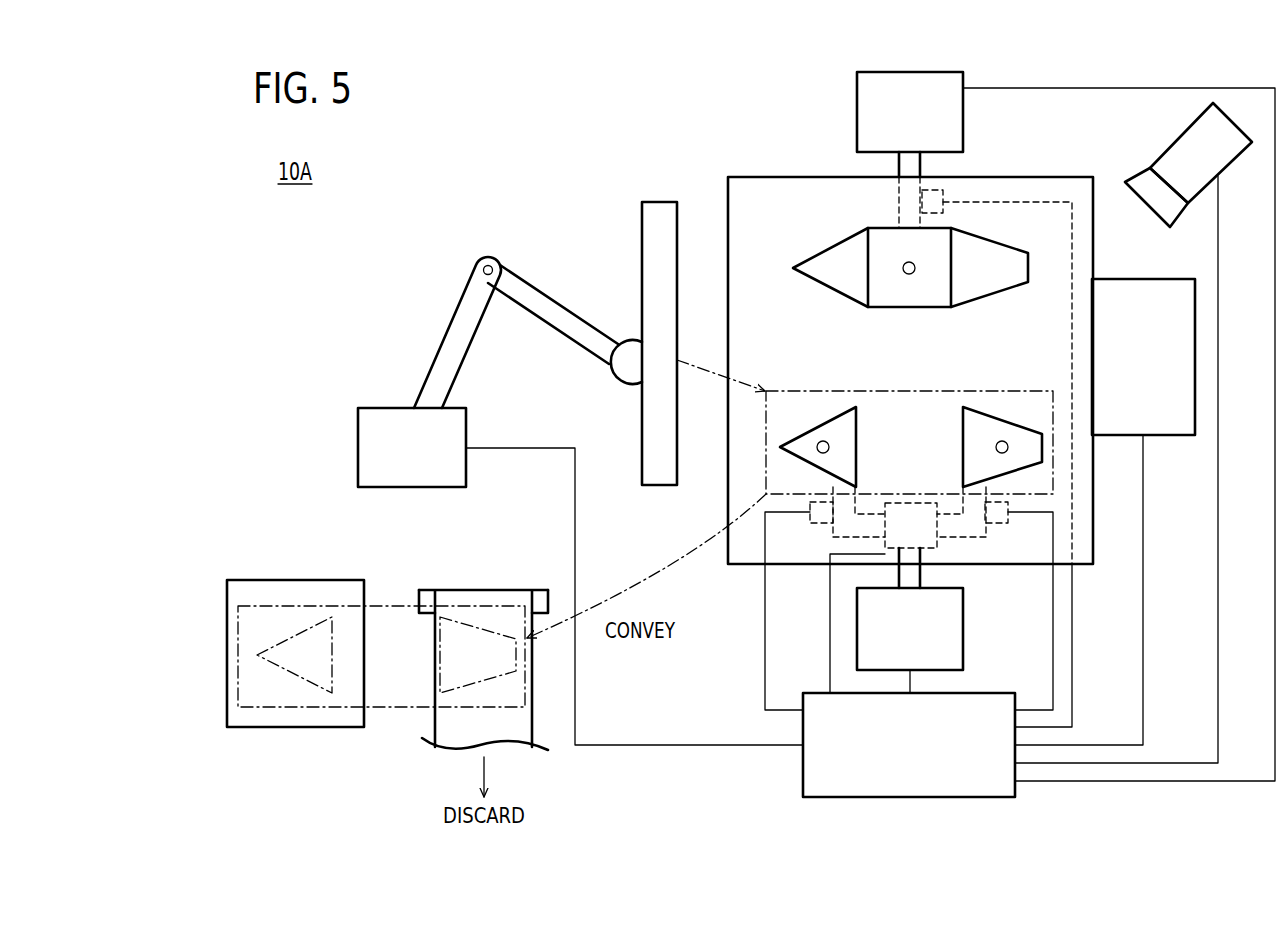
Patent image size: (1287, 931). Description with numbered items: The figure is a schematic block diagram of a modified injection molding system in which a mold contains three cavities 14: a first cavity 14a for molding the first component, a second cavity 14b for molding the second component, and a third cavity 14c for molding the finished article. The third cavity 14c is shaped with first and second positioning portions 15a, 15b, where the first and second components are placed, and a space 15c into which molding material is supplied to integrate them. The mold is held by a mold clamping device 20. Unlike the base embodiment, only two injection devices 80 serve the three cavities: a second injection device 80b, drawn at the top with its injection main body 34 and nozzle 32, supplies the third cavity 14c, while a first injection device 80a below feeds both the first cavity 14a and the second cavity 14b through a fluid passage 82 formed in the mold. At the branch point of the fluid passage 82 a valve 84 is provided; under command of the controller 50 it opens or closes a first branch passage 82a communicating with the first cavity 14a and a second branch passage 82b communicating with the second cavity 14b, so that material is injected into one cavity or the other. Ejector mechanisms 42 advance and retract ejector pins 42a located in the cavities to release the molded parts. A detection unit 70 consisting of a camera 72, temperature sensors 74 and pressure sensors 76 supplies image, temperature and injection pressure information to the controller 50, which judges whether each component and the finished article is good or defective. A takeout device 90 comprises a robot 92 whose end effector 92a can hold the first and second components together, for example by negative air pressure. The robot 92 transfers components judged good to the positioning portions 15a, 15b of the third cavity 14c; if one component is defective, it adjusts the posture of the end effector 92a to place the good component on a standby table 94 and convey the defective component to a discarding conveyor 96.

The cavities 14 is at (902, 342).
The first cavity 14a is at (818, 428).
The second cavity 14b is at (976, 428).
The third cavity 14c is at (902, 269).
The first positioning portion 15a is at (828, 258).
The second positioning portion 15b is at (968, 247).
The space 15c is at (933, 292).
The mold clamping device 20 is at (1168, 436).
The nozzle 32 is at (907, 163).
The injection main body 34 is at (947, 112).
The ejector mechanisms 42 is at (846, 235).
The ejector pins 42a is at (905, 262).
The controller 50 is at (803, 772).
The detection unit 70 is at (974, 377).
The camera 72 is at (1180, 130).
The temperature sensors 74 is at (953, 197).
The pressure sensors 76 is at (997, 523).
The injection devices 80 is at (930, 397).
The first injection device 80a is at (963, 655).
The second injection device 80b is at (857, 102).
The fluid passage 82 is at (867, 615).
The first branch passage 82a is at (853, 538).
The second branch passage 82b is at (953, 543).
The valve 84 is at (910, 520).
The takeout device 90 is at (450, 273).
The robot 92 is at (358, 438).
The end effector 92a is at (642, 232).
The standby table 94 is at (275, 727).
The discarding conveyor 96 is at (433, 718).